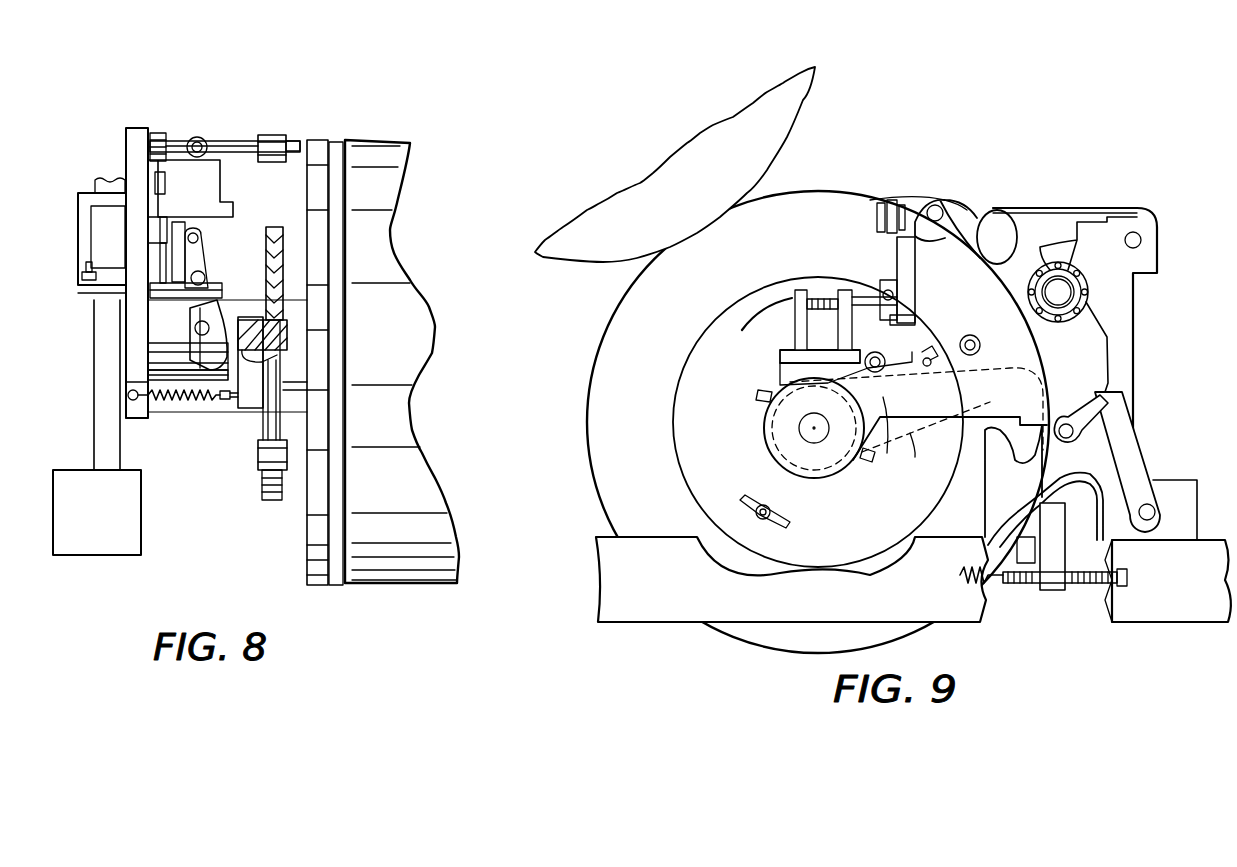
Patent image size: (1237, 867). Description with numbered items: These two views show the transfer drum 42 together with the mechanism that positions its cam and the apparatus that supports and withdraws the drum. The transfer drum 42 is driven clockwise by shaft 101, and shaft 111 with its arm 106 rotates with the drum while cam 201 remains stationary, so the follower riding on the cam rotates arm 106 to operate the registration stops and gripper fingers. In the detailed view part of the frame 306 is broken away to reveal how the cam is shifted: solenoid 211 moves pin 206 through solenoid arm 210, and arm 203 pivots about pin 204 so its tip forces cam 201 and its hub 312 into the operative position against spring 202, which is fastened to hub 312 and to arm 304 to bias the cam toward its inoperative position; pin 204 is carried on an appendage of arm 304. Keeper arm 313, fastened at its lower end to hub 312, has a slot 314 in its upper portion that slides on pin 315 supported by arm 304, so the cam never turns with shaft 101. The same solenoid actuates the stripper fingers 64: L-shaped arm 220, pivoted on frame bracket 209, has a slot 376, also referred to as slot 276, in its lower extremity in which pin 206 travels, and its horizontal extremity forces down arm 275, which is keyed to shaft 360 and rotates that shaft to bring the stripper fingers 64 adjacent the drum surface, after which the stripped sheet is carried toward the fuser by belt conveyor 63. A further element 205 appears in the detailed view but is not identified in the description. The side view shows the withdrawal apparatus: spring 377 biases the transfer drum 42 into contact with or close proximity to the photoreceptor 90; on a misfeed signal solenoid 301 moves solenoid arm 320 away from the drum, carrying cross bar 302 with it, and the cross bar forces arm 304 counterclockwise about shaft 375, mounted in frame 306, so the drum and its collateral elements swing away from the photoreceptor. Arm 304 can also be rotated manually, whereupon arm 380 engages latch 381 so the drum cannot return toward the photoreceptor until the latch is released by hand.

In FIG. 8, the transfer drum 42 is at (388, 584).
In FIG. 9, the transfer drum 42 is at (610, 346).
In FIG. 9, the belt conveyor 63 is at (1032, 211).
In FIG. 9, the stripper fingers 64 is at (874, 204).
In FIG. 9, the photoreceptor 90 is at (812, 102).
In FIG. 8, the shaft 101 is at (165, 362).
In FIG. 9, the shaft 101 is at (805, 428).
In FIG. 8, the arm 106 is at (256, 462).
In FIG. 8, the shaft 111 is at (290, 458).
In FIG. 8, the cam 201 is at (262, 430).
In FIG. 9, the cam 201 is at (678, 410).
In FIG. 8, the spring 202 is at (150, 405).
In FIG. 9, the spring 202 is at (760, 394).
In FIG. 8, the arm 203 is at (215, 262).
In FIG. 9, the arm 203 is at (801, 290).
In FIG. 8, the pin 204 is at (215, 280).
In FIG. 8, the spring 205 is at (202, 402).
In FIG. 8, the pin 206 is at (226, 222).
In FIG. 9, the pin 206 is at (884, 292).
In FIG. 8, the frame bracket 209 is at (193, 137).
In FIG. 9, the frame bracket 209 is at (906, 270).
In FIG. 8, the solenoid arm 210 is at (175, 222).
In FIG. 8, the solenoid 211 is at (78, 225).
In FIG. 8, the arm 220 is at (250, 122).
In FIG. 9, the arm 220 is at (882, 246).
In FIG. 8, the arm 275 is at (276, 135).
In FIG. 8, the slot 276 is at (215, 245).
In FIG. 9, the solenoid 301 is at (1190, 502).
In FIG. 9, the cross bar 302 is at (1020, 538).
In FIG. 8, the arm 304 is at (136, 380).
In FIG. 9, the arm 304 is at (958, 216).
In FIG. 8, the frame 306 is at (92, 440).
In FIG. 9, the frame 306 is at (1133, 302).
In FIG. 8, the hub 312 is at (258, 406).
In FIG. 8, the keeper arm 313 is at (218, 320).
In FIG. 9, the keeper arm 313 is at (882, 440).
In FIG. 8, the slot 314 is at (212, 300).
In FIG. 9, the slot 314 is at (940, 368).
In FIG. 8, the pin 315 is at (168, 356).
In FIG. 9, the pin 315 is at (928, 356).
In FIG. 9, the solenoid arm 320 is at (1068, 548).
In FIG. 8, the shaft 360 is at (164, 136).
In FIG. 9, the shaft 360 is at (932, 204).
In FIG. 9, the shaft 375 is at (1066, 290).
In FIG. 9, the slot 376 is at (1070, 584).
In FIG. 9, the spring 377 is at (985, 585).
In FIG. 9, the arm 380 is at (1128, 420).
In FIG. 9, the latch 381 is at (1120, 398).